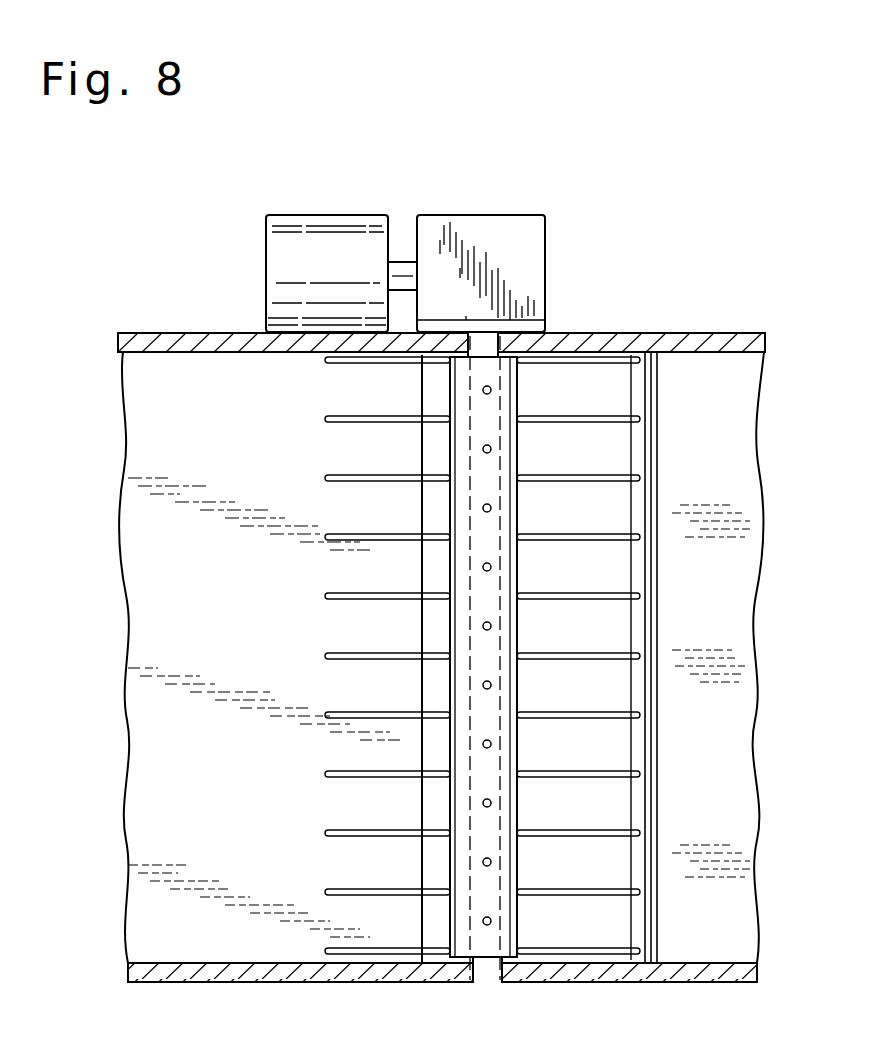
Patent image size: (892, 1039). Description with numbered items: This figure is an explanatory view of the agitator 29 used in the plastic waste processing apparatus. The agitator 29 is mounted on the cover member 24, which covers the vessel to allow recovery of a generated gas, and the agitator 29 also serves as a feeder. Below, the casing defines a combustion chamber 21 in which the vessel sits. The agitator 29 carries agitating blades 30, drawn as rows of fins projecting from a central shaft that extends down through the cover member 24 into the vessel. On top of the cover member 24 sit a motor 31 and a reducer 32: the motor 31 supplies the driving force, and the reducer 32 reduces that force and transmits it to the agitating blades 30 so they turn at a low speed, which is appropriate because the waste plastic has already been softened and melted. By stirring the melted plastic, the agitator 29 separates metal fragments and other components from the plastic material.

The combustion chamber 21 is at (165, 442).
The cover member 24 is at (648, 333).
The agitator 29 is at (426, 224).
The agitating blades 30 is at (363, 477).
The motor 31 is at (298, 215).
The reducer 32 is at (485, 215).